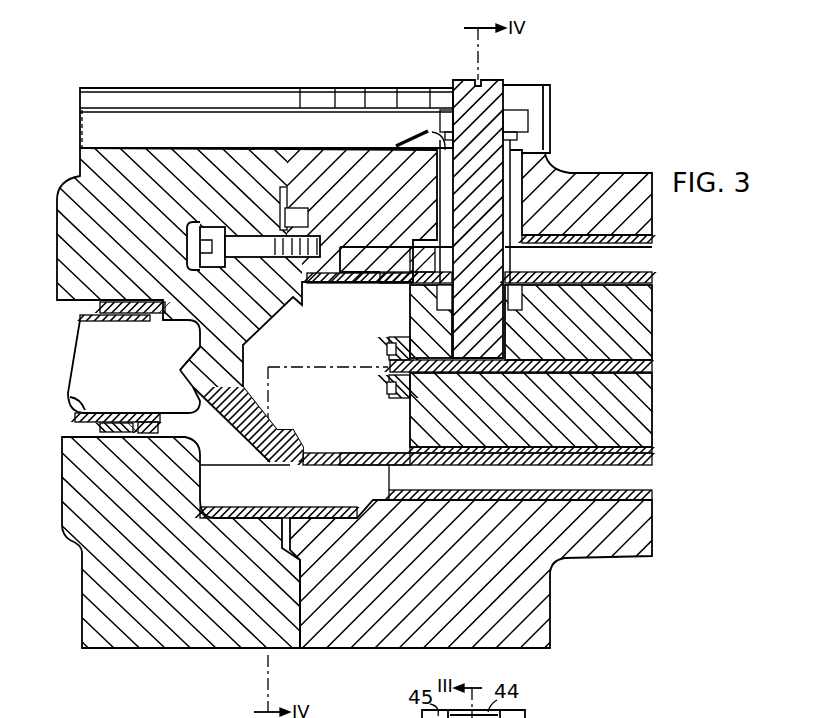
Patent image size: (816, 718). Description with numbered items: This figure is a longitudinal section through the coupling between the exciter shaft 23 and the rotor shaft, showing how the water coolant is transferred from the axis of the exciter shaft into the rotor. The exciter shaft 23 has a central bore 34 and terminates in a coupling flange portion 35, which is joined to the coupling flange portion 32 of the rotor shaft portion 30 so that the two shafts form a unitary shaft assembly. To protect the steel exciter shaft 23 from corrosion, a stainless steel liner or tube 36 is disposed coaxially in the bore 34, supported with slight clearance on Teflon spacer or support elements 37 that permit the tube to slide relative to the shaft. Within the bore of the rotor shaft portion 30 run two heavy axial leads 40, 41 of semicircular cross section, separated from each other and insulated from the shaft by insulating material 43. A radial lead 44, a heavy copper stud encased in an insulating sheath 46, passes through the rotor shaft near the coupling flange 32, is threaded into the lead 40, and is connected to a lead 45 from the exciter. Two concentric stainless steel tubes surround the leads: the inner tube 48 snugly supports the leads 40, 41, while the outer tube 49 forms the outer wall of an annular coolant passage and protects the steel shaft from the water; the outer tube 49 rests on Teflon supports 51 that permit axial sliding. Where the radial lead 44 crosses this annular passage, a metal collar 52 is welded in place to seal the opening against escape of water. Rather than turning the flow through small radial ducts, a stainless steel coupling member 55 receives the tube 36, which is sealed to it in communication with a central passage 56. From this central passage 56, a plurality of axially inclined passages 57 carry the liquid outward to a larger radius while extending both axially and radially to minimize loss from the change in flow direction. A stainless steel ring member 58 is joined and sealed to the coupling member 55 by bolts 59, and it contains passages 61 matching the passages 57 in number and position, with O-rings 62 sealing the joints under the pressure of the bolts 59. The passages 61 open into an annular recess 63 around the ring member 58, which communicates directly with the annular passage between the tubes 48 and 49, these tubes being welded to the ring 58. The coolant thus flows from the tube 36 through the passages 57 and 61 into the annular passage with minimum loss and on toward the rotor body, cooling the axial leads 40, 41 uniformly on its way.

The exciter shaft 23 is at (62, 202).
The shaft portion 30 is at (588, 173).
The coupling flange portion 32 is at (403, 648).
The central bore 34 is at (76, 306).
The coupling flange portion 35 is at (165, 648).
The liner or tube 36 is at (73, 401).
The spacer or support elements 37 is at (100, 428).
The lead 40 is at (652, 308).
The lead 41 is at (652, 392).
The insulating material 43 is at (652, 366).
The radial lead 44 is at (488, 90).
The lead 45 is at (76, 116).
The insulating sheath 46 is at (418, 134).
The inner tube 48 is at (652, 268).
The outer tube 49 is at (652, 240).
The spacers or supports 51 is at (452, 489).
The metal collar 52 is at (548, 262).
The coupling member 55 is at (262, 312).
The central opening or passage 56 is at (184, 322).
The axially inclined passages 57 is at (193, 387).
The ring member 58 is at (322, 283).
The bolts 59 is at (240, 237).
The passages 61 is at (477, 444).
The O-rings 62 is at (290, 508).
The annular recess 63 is at (362, 465).